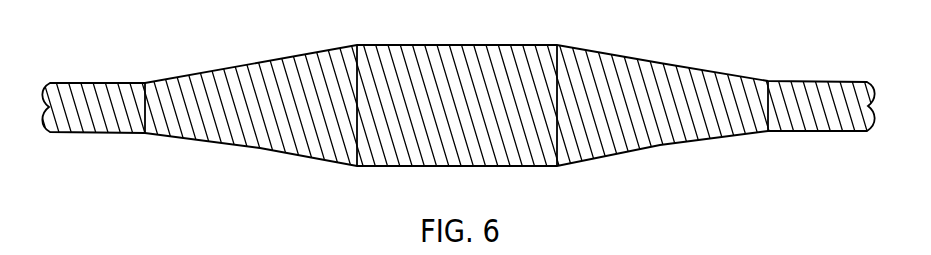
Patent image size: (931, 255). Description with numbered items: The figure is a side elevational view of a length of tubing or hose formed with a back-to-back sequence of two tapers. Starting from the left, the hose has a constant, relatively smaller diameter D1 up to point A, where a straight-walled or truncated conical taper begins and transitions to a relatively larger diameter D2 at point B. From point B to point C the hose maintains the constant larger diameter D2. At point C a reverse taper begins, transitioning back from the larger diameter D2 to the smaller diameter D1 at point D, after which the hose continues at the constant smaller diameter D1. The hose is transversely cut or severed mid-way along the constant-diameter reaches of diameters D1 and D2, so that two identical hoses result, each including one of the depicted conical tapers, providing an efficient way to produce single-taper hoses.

The point A is at (144, 90).
The point B is at (356, 90).
The point C is at (556, 90).
The point D is at (768, 90).
The relatively smaller diameter D1 is at (90, 83).
The relatively larger diameter D2 is at (457, 45).